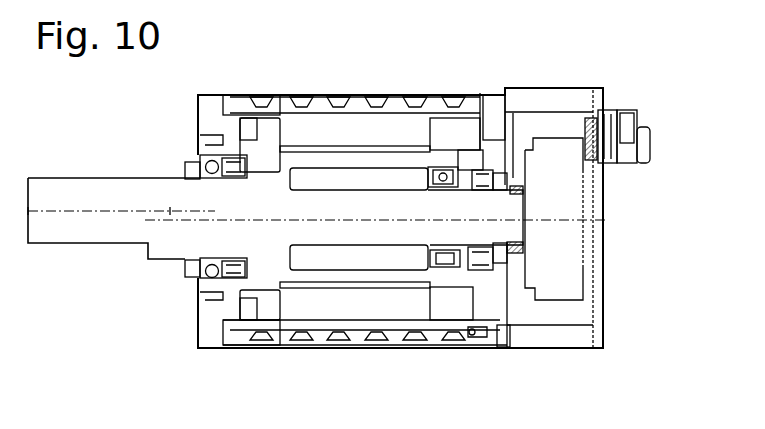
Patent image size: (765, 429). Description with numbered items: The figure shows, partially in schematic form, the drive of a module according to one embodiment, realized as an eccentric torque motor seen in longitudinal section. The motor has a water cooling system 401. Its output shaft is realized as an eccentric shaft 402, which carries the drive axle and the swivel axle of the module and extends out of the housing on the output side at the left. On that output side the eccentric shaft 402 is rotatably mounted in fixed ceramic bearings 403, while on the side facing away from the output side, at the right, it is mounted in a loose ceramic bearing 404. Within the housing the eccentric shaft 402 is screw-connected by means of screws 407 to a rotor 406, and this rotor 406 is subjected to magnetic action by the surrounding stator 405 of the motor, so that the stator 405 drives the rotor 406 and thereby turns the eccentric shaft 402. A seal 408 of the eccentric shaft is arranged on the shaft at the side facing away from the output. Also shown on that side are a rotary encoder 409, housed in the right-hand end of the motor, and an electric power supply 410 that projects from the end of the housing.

The water cooling system 401 is at (329, 335).
The eccentric shaft 402 is at (100, 203).
The fixed ceramic bearings 403 is at (230, 275).
The loose ceramic bearing 404 is at (487, 265).
The stator 405 is at (305, 115).
The rotor 406 is at (298, 162).
The screws 407 is at (448, 168).
The seal 408 is at (526, 194).
The rotary encoder 409 is at (578, 260).
The electric power supply 410 is at (641, 130).